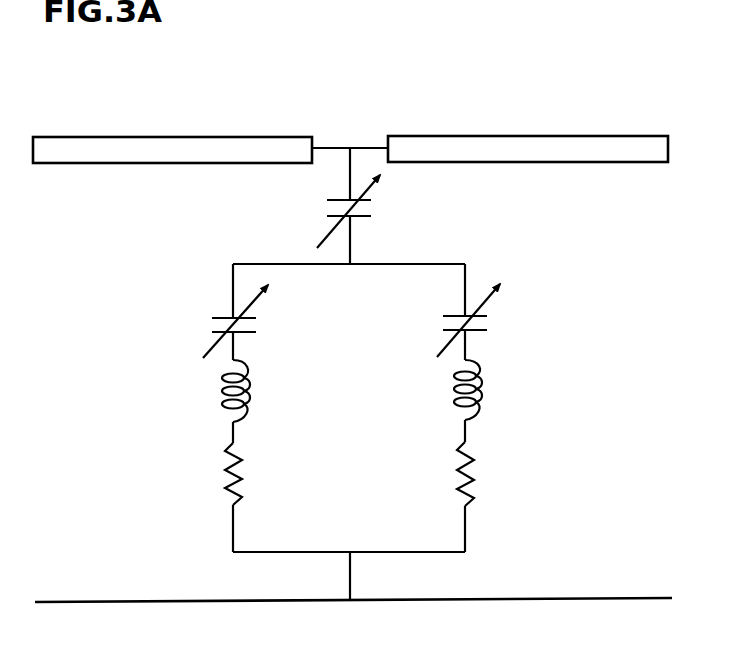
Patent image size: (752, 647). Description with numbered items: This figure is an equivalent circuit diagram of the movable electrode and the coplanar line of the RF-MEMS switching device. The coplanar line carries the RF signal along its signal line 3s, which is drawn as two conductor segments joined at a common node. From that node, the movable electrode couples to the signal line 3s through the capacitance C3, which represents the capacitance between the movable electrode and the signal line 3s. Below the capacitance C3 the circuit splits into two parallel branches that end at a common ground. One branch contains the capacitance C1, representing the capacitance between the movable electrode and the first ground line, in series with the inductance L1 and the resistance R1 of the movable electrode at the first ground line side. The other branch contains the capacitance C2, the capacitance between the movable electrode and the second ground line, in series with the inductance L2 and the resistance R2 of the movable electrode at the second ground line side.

The signal line 3s is at (187, 145).
The capacitance between the movable electrode and the ground line 3g1 C1 is at (208, 325).
The capacitance between the movable electrode and the ground line 3g2 C2 is at (483, 325).
The capacitance between the movable electrode and the signal line C3 is at (367, 217).
The inductance of the movable electrode at the ground line 3g1 side L1 is at (220, 388).
The inductance of the movable electrode at the ground line 3g2 side L2 is at (482, 388).
The resistance of the movable electrode at the ground line 3g1 side R1 is at (230, 483).
The resistance of the movable electrode at the ground line 3g2 side R2 is at (477, 477).